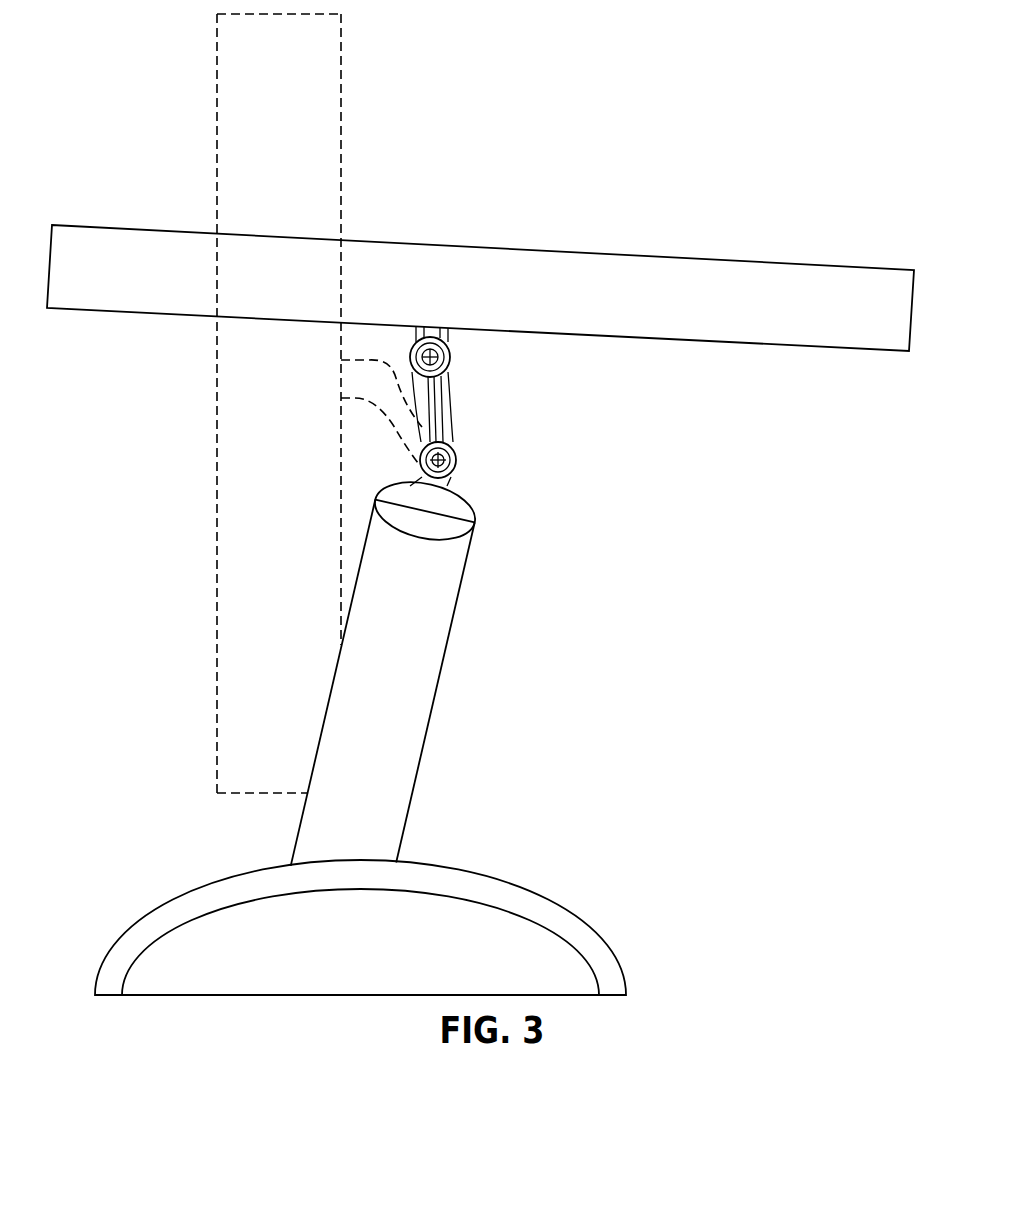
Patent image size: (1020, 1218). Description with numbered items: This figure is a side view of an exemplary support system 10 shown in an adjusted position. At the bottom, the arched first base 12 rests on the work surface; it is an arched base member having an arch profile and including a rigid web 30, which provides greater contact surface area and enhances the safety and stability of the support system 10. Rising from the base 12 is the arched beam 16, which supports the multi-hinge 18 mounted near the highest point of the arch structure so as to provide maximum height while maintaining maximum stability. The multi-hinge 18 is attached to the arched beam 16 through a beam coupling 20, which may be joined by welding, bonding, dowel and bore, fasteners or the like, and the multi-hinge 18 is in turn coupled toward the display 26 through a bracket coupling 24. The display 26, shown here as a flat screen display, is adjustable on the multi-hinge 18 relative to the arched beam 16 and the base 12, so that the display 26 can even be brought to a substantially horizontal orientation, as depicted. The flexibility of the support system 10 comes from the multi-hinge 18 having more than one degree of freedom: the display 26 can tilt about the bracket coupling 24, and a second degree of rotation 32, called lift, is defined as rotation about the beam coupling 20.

The support system 10 is at (667, 110).
The first base 12 is at (330, 672).
The arched beam 16 is at (408, 635).
The multi-hinge 18 is at (448, 410).
The beam coupling 20 is at (448, 482).
The bracket coupling 24 is at (448, 335).
The display 26 is at (550, 307).
The web 30 is at (350, 954).
The second degree of rotation 32 is at (567, 409).